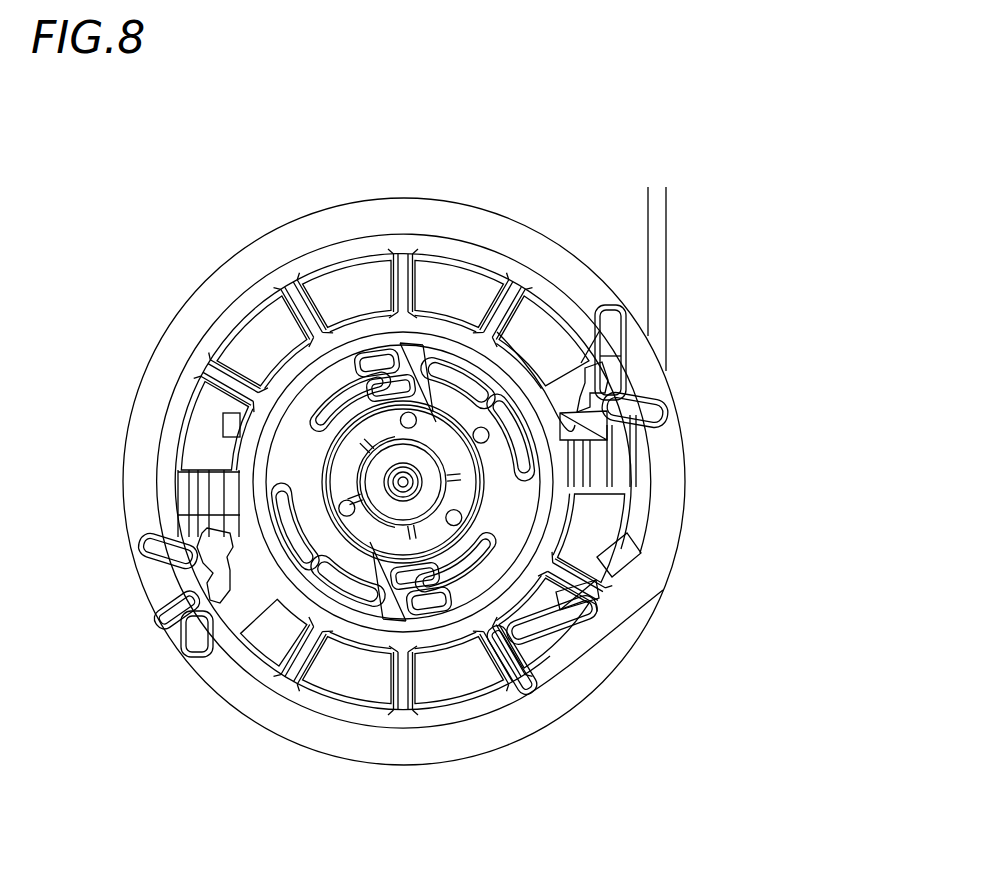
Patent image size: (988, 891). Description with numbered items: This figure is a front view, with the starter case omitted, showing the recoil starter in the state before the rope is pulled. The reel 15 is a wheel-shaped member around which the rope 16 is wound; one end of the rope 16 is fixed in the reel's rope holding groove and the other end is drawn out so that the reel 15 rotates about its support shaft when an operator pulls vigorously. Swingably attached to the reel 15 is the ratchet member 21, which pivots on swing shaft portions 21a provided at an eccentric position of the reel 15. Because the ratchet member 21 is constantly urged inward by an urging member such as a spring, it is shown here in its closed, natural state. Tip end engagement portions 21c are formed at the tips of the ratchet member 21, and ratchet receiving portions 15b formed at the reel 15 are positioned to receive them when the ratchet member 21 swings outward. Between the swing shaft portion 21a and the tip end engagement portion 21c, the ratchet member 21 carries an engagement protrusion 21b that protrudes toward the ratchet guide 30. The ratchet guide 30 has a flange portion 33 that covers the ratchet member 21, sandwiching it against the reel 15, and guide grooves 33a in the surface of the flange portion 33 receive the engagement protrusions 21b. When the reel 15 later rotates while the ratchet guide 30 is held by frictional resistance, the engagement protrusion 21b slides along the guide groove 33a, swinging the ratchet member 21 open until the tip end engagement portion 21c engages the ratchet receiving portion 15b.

The reel 15 is at (537, 441).
The ratchet receiving portion 15b is at (570, 363).
The rope 16 is at (667, 205).
The ratchet member 21 is at (463, 380).
The swing shaft portion 21a is at (323, 482).
The engagement protrusion 21b is at (667, 407).
The tip end engagement portion 21c is at (370, 353).
The ratchet guide 30 is at (503, 537).
The flange portion 33 is at (473, 570).
The guide groove 33a is at (412, 342).